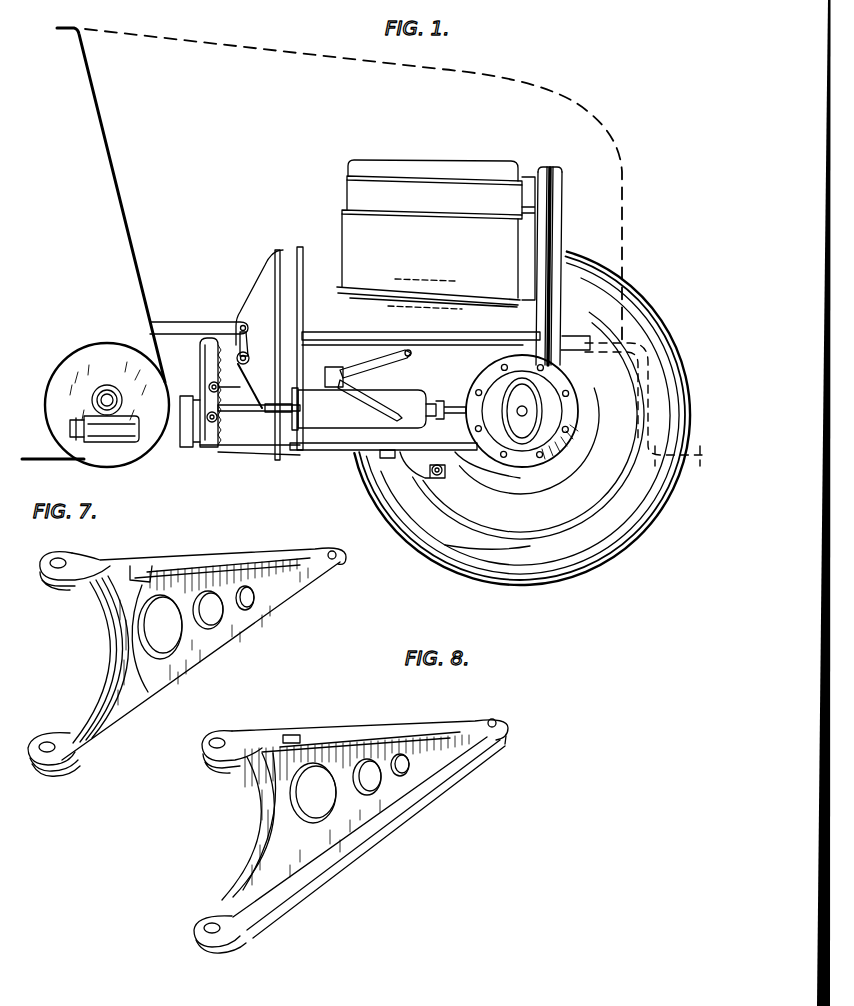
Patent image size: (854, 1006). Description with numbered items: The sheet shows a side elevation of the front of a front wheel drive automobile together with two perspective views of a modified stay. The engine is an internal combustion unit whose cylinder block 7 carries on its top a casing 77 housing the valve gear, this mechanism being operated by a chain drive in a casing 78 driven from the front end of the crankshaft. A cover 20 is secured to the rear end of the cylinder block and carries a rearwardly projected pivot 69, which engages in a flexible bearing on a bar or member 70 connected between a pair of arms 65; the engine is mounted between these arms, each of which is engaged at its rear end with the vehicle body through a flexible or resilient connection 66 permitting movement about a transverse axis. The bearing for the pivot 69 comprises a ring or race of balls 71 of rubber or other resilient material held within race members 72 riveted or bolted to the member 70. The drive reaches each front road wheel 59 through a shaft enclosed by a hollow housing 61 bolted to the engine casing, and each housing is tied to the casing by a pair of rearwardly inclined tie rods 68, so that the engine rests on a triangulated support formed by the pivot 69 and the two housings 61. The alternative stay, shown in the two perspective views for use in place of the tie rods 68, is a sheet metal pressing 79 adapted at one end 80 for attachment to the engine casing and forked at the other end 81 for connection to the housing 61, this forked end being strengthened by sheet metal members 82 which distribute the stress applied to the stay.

In FIG. 1, the cylinder block 7 is at (436, 243).
In FIG. 1, the cover 20 is at (265, 288).
In FIG. 1, the front road wheel 59 is at (635, 515).
In FIG. 1, the hollow housing 61 is at (508, 386).
In FIG. 1, the arm 65 is at (109, 442).
In FIG. 1, the flexible or resilient connection 66 is at (104, 358).
In FIG. 1, the tie rod 68 is at (384, 360).
In FIG. 1, the pivot 69 is at (229, 404).
In FIG. 1, the bar or member 70 is at (210, 338).
In FIG. 1, the ring or race of balls 71 is at (210, 386).
In FIG. 1, the race member 72 is at (262, 404).
In FIG. 1, the casing 77 is at (460, 176).
In FIG. 1, the casing 78 is at (558, 230).
In FIG. 7, the sheet metal pressing 79 is at (200, 585).
In FIG. 8, the sheet metal pressing 79 is at (355, 800).
In FIG. 7, the end 80 is at (187, 646).
In FIG. 8, the end 80 is at (351, 823).
In FIG. 7, the forked end 81 is at (57, 572).
In FIG. 8, the forked end 81 is at (208, 757).
In FIG. 7, the sheet metal member 82 is at (105, 582).
In FIG. 8, the sheet metal member 82 is at (237, 740).